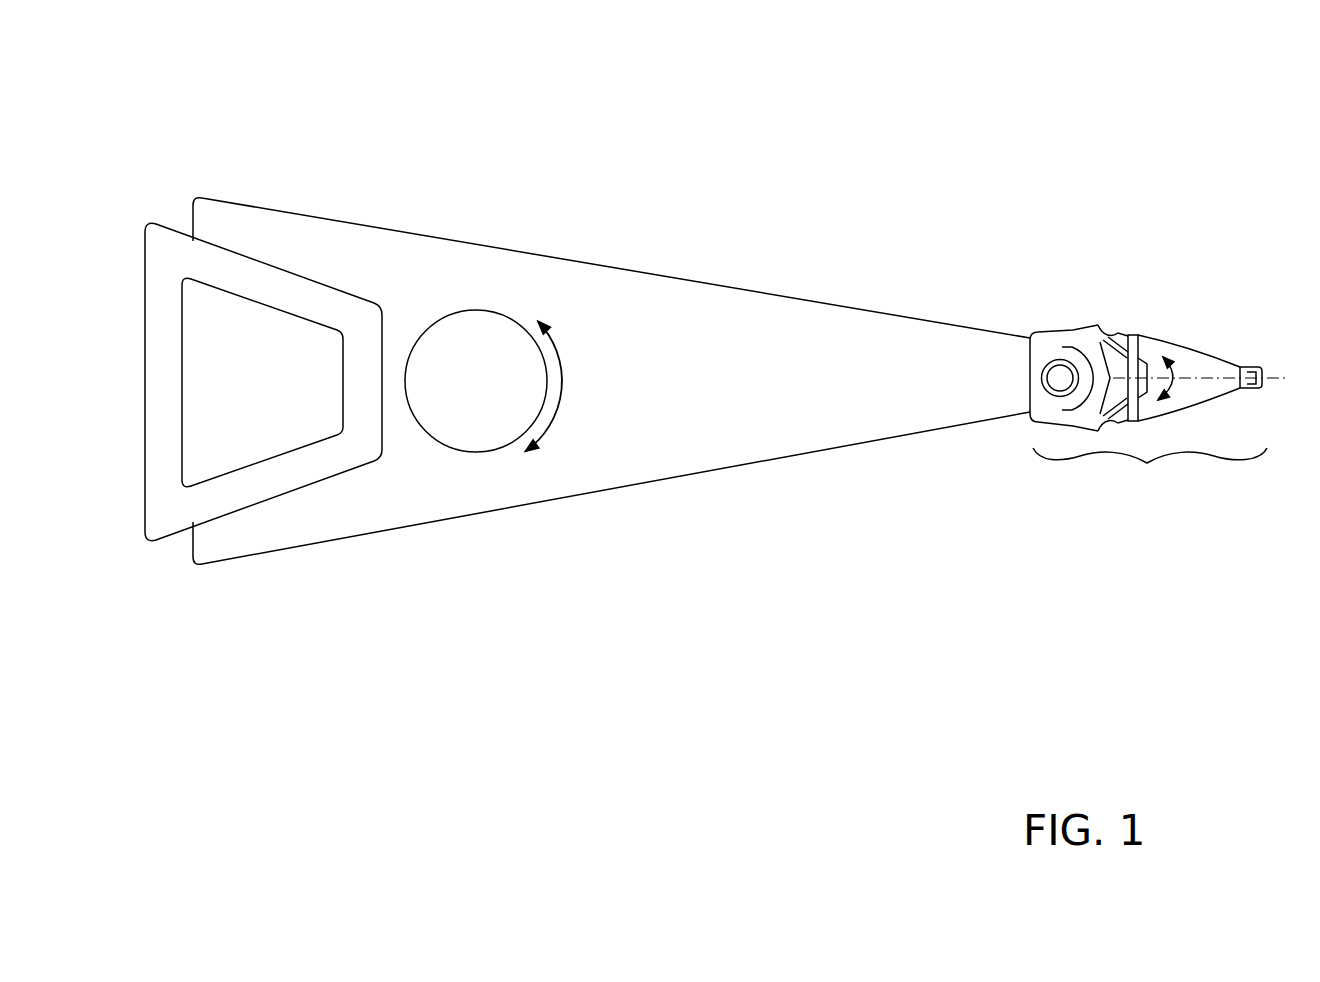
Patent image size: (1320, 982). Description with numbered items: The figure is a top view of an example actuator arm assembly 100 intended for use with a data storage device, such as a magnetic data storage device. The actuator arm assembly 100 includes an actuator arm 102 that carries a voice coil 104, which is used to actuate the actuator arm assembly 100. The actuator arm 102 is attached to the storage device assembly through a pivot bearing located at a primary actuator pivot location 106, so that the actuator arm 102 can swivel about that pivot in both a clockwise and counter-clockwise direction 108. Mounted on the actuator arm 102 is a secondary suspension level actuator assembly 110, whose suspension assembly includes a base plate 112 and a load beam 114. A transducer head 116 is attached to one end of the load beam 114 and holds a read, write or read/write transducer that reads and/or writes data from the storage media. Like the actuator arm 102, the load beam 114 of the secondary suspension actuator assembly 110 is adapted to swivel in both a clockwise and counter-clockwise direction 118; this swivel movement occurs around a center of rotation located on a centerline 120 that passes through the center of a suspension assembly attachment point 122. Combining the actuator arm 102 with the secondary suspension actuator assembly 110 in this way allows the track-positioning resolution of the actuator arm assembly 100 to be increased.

The actuator arm assembly 100 is at (682, 152).
The actuator arm 102 is at (737, 467).
The voice coil 104 is at (158, 540).
The primary actuator pivot location 106 is at (475, 452).
The clockwise and counter-clockwise direction 108 is at (560, 407).
The secondary suspension level actuator assembly 110 is at (1147, 463).
The base plate 112 is at (1097, 323).
The load beam 114 is at (1157, 343).
The transducer head 116 is at (1256, 389).
The clockwise and counter-clockwise direction 118 is at (1180, 372).
The centerline 120 is at (1203, 379).
The suspension assembly attachment point 122 is at (1060, 360).